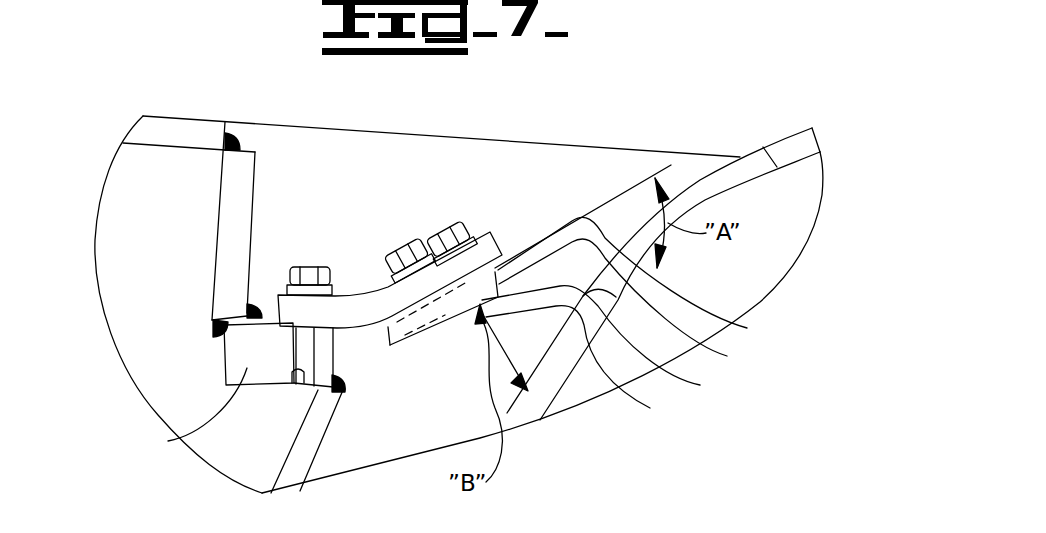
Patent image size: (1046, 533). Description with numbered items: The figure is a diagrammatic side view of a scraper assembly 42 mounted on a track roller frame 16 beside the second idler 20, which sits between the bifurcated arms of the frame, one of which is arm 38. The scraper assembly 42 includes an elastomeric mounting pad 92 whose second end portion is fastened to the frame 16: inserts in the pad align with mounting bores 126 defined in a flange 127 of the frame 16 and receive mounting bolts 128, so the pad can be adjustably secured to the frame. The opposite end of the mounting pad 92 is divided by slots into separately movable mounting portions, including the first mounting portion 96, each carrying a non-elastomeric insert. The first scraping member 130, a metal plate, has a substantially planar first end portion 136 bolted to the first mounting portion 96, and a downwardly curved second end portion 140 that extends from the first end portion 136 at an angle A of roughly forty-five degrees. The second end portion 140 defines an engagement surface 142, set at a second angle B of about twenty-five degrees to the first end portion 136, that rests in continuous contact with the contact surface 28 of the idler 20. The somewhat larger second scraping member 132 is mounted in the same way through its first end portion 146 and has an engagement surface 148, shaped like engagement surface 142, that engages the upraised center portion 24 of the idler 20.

The track roller frame 16 is at (140, 330).
The second idler 20 is at (772, 283).
The center portion 24 is at (793, 133).
The contact surface 28 is at (745, 156).
The arm 38 is at (584, 172).
The scraper assembly 42 is at (348, 128).
The elastomeric mounting pad 92 is at (340, 317).
The first mounting portion 96 is at (447, 318).
The mounting bores 126 is at (222, 480).
The flange 127 is at (170, 441).
The mounting bolts 128 is at (308, 268).
The first scraping member 130 is at (645, 406).
The second scraping member 132 is at (638, 267).
The first end portion 136 is at (577, 354).
The second end portion 140 is at (718, 355).
The engagement surface 142 is at (690, 384).
The first end portion 146 is at (505, 272).
The engagement surface 148 is at (747, 328).